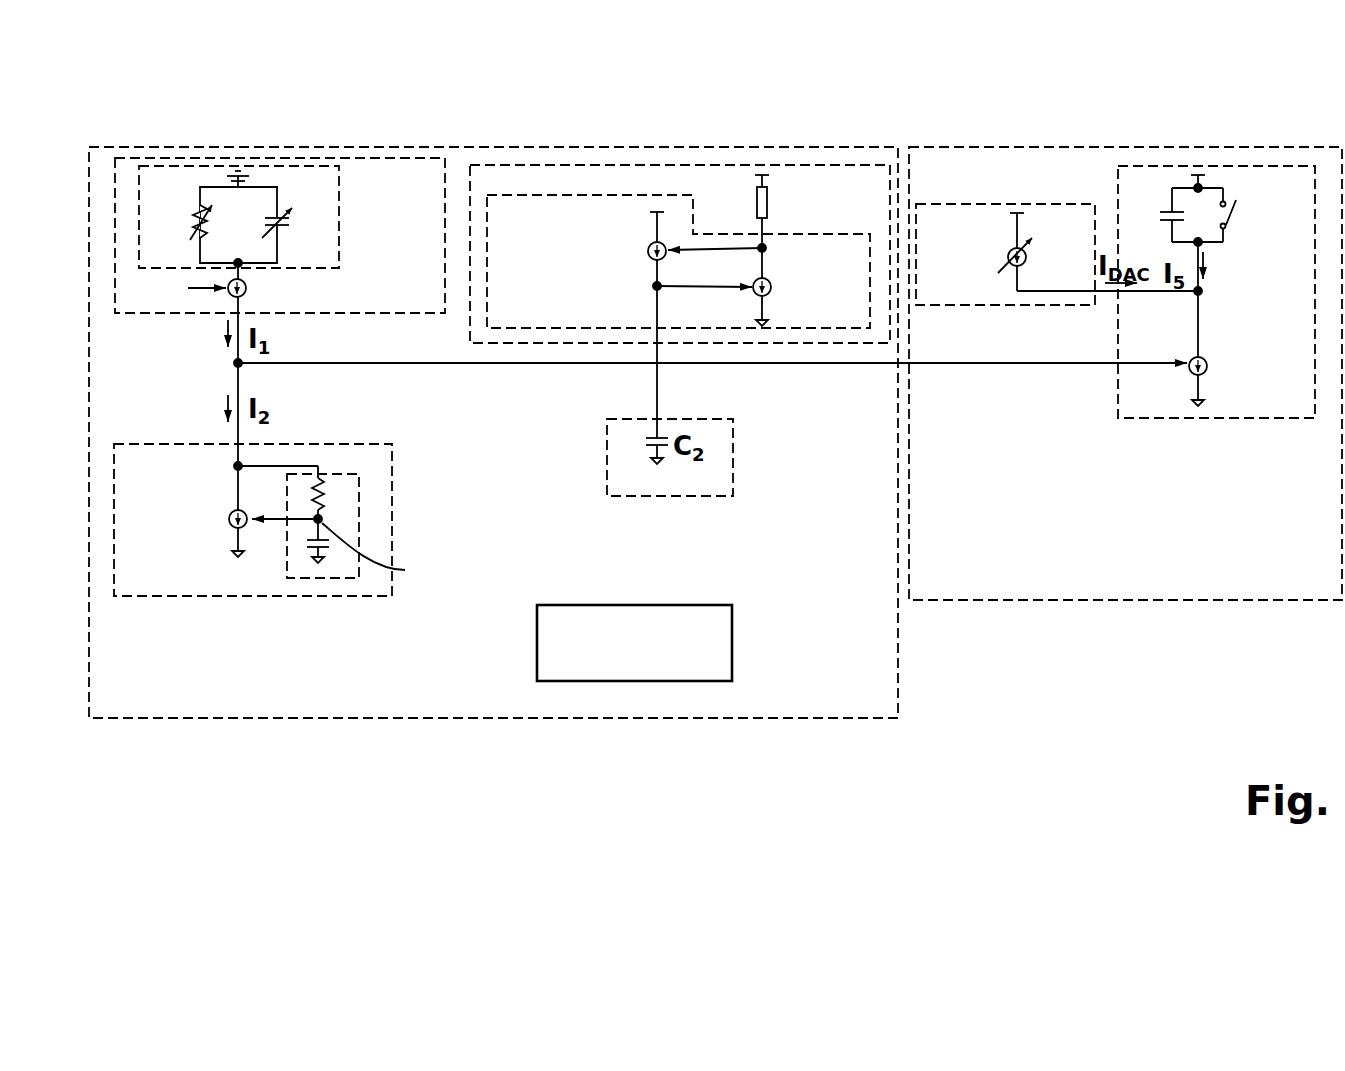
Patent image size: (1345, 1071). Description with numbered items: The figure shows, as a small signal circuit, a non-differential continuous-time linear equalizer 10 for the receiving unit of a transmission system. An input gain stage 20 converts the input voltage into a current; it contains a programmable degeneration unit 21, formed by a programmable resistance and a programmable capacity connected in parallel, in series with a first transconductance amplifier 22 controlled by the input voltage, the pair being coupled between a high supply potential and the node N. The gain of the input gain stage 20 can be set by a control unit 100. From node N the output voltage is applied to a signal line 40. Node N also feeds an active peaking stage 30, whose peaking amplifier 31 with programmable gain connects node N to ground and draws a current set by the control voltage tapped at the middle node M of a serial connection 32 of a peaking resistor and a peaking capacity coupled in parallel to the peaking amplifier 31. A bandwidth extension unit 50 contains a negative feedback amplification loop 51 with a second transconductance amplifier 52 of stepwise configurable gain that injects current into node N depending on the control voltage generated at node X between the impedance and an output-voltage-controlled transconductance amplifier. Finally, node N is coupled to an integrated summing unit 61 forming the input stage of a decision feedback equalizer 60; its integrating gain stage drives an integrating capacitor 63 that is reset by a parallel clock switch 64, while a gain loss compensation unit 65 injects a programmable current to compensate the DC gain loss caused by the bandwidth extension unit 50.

The continuous-time linear equalizer 10 is at (900, 96).
The input gain stage 20 is at (393, 158).
The programmable degeneration unit 21 is at (339, 200).
The first transconductance amplifier 22 is at (232, 299).
The active peaking stage 30 is at (345, 444).
The peaking amplifier 31 is at (232, 508).
The serial connection of peaking resistor and peaking capacity 32 is at (359, 525).
The signal line 40 is at (522, 365).
The bandwidth extension unit 50 is at (820, 165).
The negative feedback amplification loop 51 is at (557, 195).
The second transconductance amplifier 52 is at (652, 242).
The decision feedback equalizer 60 is at (1058, 147).
The integrated summing unit 61 is at (1202, 255).
The integrating capacitor 63 is at (1160, 213).
The clock switch 64 is at (1232, 213).
The gain loss compensation unit 65 is at (985, 204).
The control unit 100 is at (732, 643).